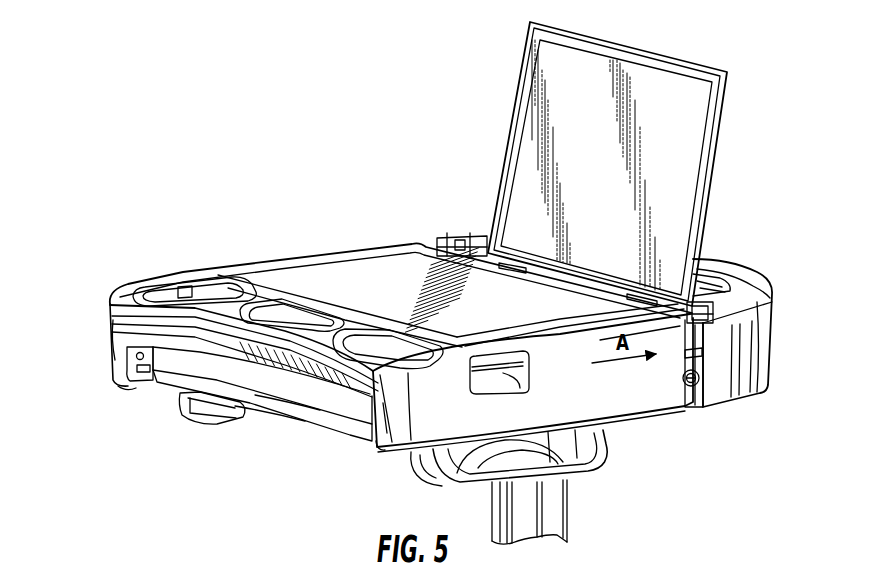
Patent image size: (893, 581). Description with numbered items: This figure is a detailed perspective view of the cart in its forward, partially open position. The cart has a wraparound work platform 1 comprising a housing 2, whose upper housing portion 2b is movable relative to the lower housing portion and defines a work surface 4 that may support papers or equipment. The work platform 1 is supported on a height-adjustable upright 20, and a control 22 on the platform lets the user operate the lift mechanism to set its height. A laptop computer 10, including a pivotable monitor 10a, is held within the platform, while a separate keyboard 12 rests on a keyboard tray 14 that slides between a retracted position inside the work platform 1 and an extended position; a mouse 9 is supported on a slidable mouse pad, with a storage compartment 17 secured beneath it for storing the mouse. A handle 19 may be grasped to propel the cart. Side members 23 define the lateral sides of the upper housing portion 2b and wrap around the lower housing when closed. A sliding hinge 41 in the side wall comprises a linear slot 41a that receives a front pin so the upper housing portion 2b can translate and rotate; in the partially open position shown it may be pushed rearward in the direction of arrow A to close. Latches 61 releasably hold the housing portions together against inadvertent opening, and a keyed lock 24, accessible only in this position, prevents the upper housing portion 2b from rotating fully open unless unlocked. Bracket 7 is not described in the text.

The wraparound work platform 1 is at (236, 236).
The housing 2 is at (407, 240).
The upper housing portion 2b is at (378, 454).
The work surface 4 is at (358, 270).
The mounting bracket 7 is at (423, 470).
The mouse 9 is at (434, 454).
The laptop computer 10 is at (640, 48).
The monitor 10a is at (672, 178).
The keyboard 12 is at (178, 354).
The keyboard tray 14 is at (317, 415).
The storage compartment 17 is at (230, 420).
The handle 19 is at (720, 269).
The upright 20 is at (575, 504).
The control 22 is at (505, 378).
The side members 23 is at (123, 337).
The lock 24 is at (691, 388).
The sliding hinge 41 is at (126, 401).
The linear slot 41a is at (123, 372).
The latches 61 is at (452, 238).